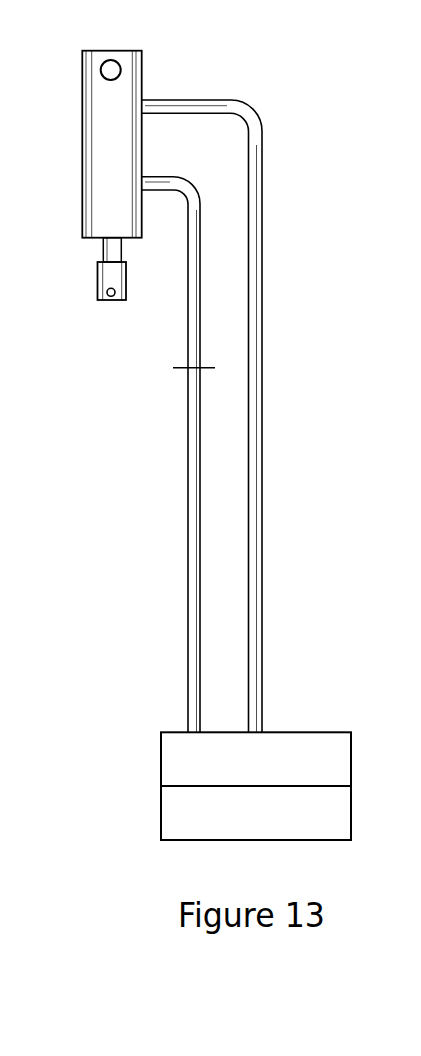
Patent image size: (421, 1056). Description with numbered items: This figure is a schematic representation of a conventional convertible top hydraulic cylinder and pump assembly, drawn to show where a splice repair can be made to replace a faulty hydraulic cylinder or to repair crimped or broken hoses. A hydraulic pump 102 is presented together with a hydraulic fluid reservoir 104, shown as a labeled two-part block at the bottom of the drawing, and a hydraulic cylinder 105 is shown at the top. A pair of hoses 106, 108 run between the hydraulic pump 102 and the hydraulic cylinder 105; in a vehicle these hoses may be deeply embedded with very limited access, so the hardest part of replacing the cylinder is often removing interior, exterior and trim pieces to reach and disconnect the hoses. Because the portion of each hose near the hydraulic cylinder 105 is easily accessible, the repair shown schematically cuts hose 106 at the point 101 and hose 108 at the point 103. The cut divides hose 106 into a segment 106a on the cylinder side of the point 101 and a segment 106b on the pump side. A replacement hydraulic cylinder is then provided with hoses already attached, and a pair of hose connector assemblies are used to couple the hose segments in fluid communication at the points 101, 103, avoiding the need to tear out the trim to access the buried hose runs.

The cut point 101 is at (183, 368).
The hydraulic pump 102 is at (323, 732).
The cut point 103 is at (231, 416).
The hydraulic fluid reservoir 104 is at (161, 813).
The hydraulic cylinder 105 is at (82, 144).
The hydraulic hose 106 is at (165, 455).
The first hose section 106a is at (188, 331).
The second hose section 106b is at (188, 420).
The hydraulic hose 108 is at (261, 388).